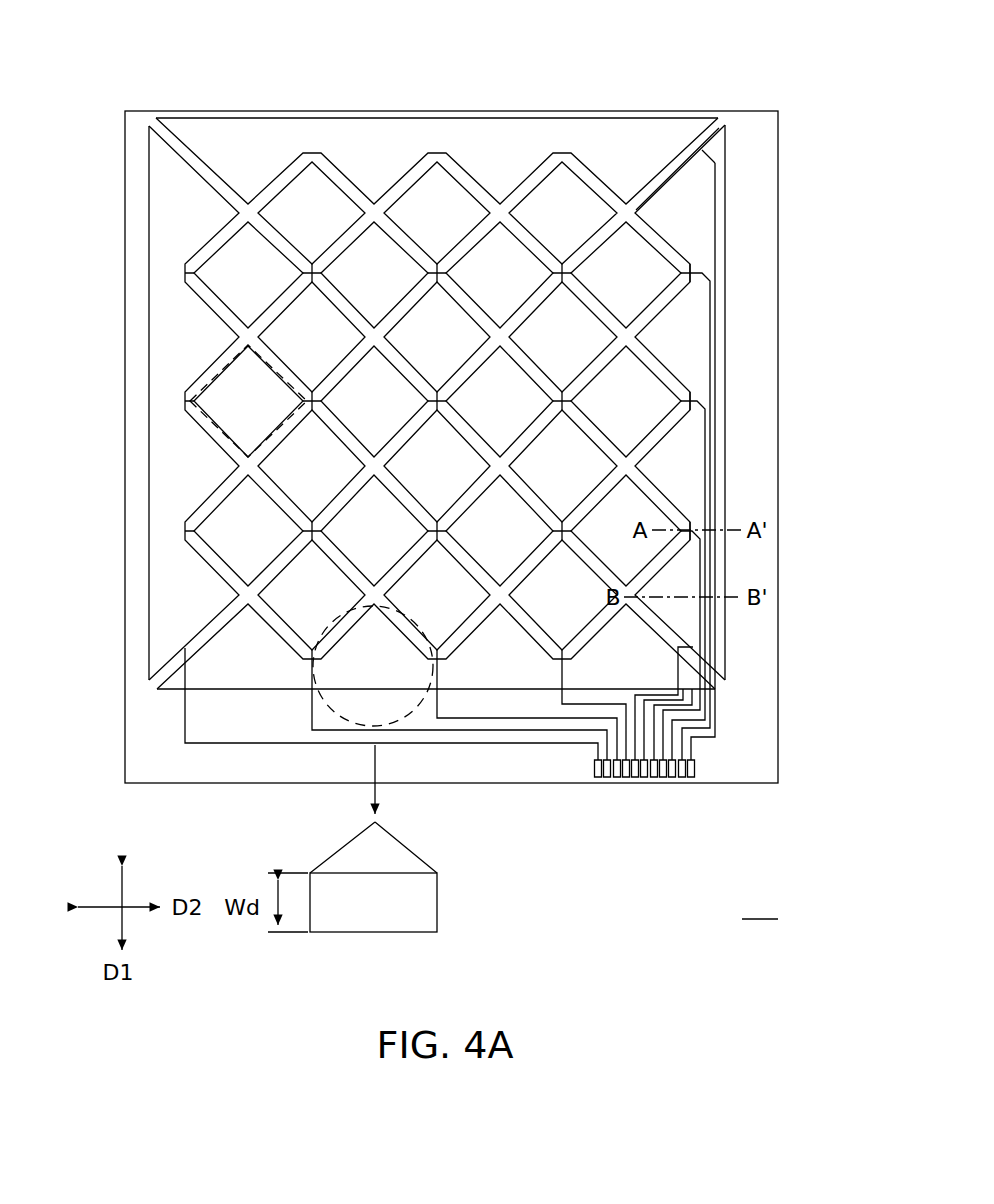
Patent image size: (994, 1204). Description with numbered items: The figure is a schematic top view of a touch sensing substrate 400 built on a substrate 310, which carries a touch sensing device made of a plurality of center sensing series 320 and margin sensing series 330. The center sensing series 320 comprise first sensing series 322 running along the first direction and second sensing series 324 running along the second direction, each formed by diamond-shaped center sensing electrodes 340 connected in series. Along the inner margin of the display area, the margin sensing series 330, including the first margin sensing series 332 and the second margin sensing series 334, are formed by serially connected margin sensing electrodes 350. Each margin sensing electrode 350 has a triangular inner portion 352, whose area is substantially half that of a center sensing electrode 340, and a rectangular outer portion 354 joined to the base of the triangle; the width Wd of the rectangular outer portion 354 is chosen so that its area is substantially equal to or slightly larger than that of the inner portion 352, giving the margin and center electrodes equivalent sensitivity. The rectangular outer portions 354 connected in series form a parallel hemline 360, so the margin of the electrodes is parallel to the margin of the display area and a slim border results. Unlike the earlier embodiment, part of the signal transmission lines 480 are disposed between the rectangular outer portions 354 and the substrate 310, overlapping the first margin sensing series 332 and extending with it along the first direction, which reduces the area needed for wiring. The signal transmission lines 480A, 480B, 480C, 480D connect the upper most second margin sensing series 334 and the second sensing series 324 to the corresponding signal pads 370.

The substrate 310 is at (733, 786).
The center sensing series 320 is at (280, 70).
The first sensing series 322 is at (309, 152).
The second sensing series 324 is at (184, 273).
The margin sensing series 330 is at (665, 56).
The first margin sensing series 332 is at (677, 168).
The second margin sensing series 334 is at (703, 144).
The center sensing electrode 340 is at (347, 245).
The margin sensing electrode 350 is at (454, 838).
The inner portion 352 is at (392, 842).
The rectangular outer portion 354 is at (432, 922).
The parallel hemline 360 is at (148, 448).
The signal pads 370 is at (599, 778).
The touch sensing substrate 400 is at (760, 907).
The signal transmission lines 480 is at (223, 745).
The signal transmission line 480A is at (715, 233).
The signal transmission line 480B is at (710, 357).
The signal transmission line 480C is at (705, 483).
The signal transmission line 480D is at (700, 637).